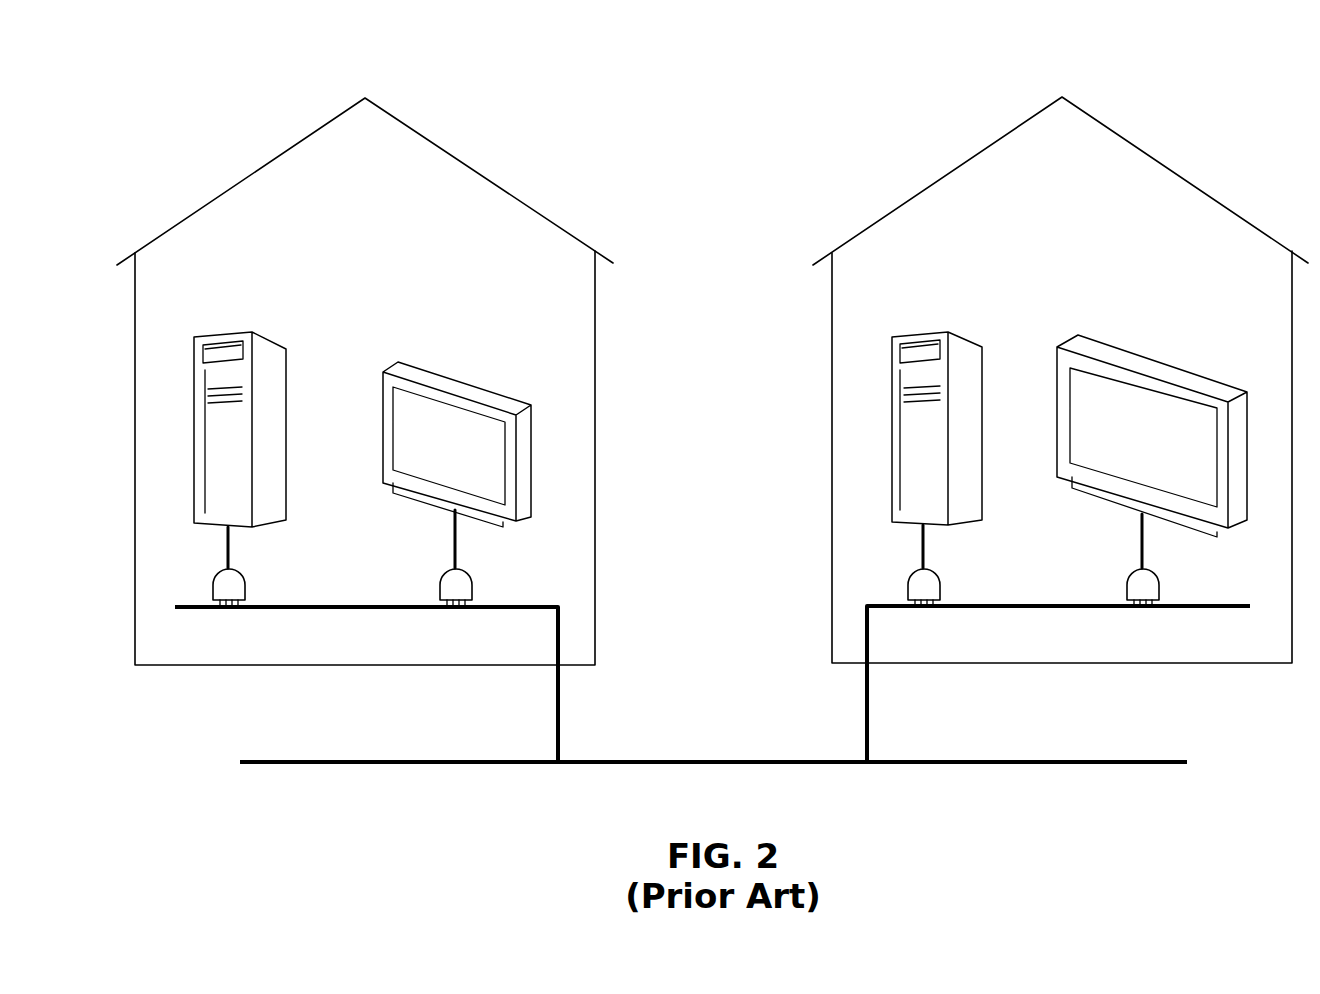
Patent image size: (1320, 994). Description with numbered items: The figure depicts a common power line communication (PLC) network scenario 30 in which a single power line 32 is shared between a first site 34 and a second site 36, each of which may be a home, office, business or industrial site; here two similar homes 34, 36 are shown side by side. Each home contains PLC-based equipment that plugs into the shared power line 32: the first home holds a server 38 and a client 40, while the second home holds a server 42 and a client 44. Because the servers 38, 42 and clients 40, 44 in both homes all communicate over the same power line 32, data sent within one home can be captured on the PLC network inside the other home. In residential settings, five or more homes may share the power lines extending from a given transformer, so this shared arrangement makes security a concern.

The PLC network scenario 30 is at (126, 74).
The power line 32 is at (713, 762).
The first site 34 is at (467, 163).
The second site 36 is at (1162, 162).
The server 38 is at (267, 337).
The client 40 is at (457, 378).
The server 42 is at (965, 337).
The client 44 is at (1125, 348).